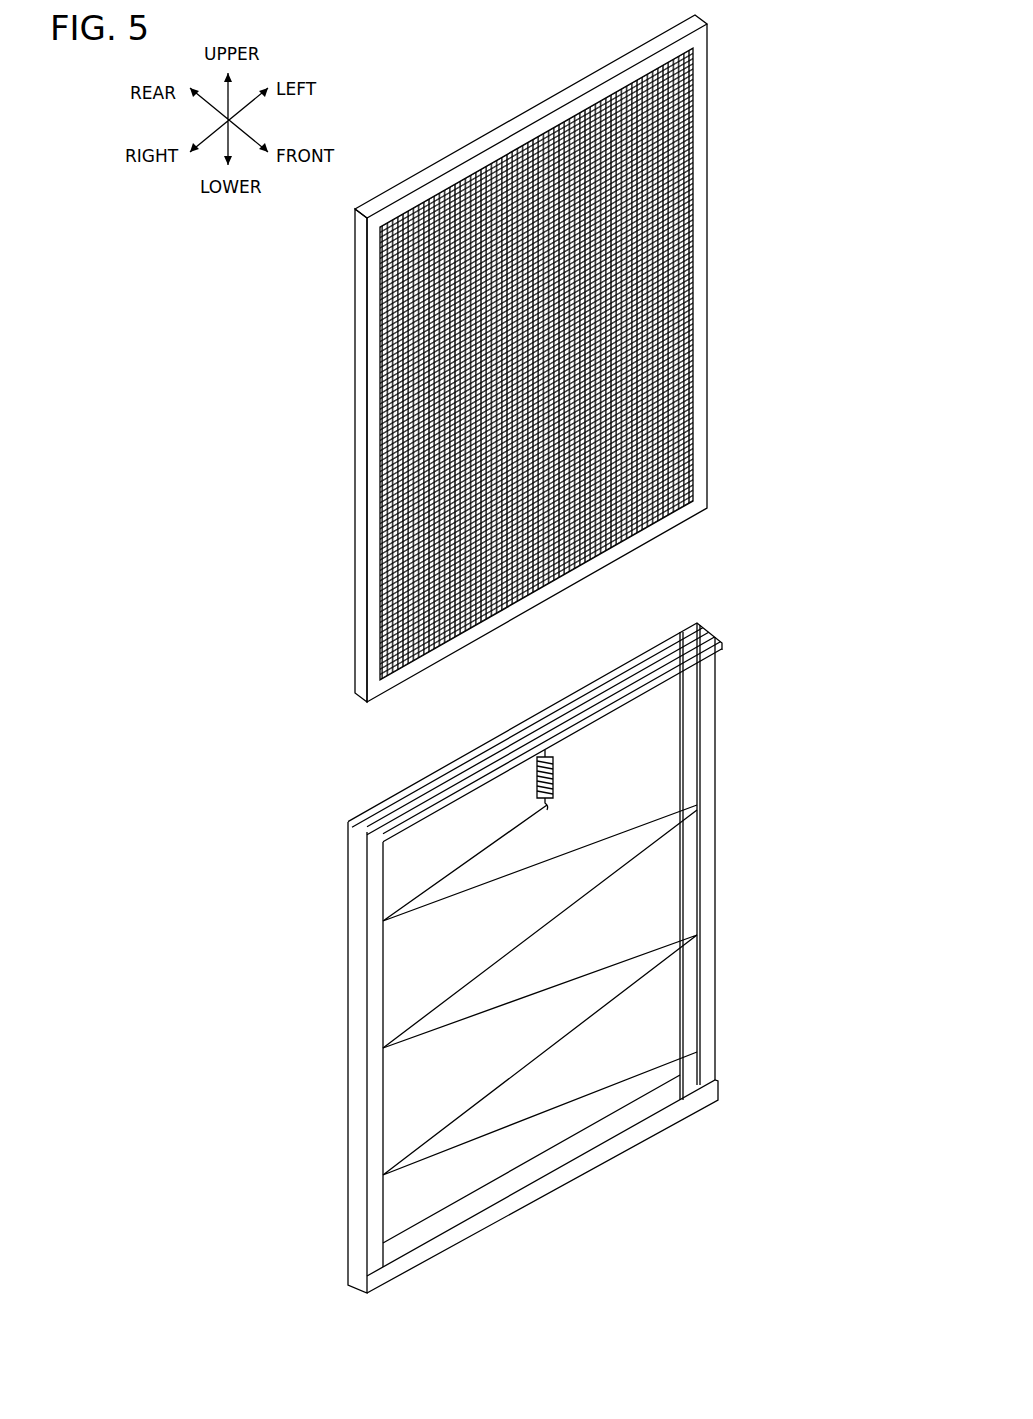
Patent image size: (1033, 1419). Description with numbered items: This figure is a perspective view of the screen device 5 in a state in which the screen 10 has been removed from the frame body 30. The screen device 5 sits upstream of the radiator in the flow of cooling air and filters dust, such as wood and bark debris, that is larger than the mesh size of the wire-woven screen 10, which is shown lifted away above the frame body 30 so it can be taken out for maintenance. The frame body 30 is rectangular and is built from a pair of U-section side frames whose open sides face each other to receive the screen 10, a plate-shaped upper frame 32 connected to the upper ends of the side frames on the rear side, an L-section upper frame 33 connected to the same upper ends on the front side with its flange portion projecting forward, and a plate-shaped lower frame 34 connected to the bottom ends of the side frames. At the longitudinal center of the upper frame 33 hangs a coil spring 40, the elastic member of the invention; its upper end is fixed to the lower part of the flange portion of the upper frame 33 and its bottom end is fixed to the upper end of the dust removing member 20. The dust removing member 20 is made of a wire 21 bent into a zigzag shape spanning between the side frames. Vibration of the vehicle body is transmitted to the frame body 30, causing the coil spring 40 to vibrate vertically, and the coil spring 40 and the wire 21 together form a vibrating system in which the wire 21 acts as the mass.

The screen device 5 is at (418, 52).
The screen 10 is at (486, 137).
The dust removing member 20 is at (625, 868).
The wire 21 is at (625, 990).
The frame body 30 is at (346, 965).
The upper frame 32 is at (348, 828).
The upper frame 33 is at (623, 707).
The lower frame 34 is at (630, 1140).
The coil spring 40 is at (556, 772).